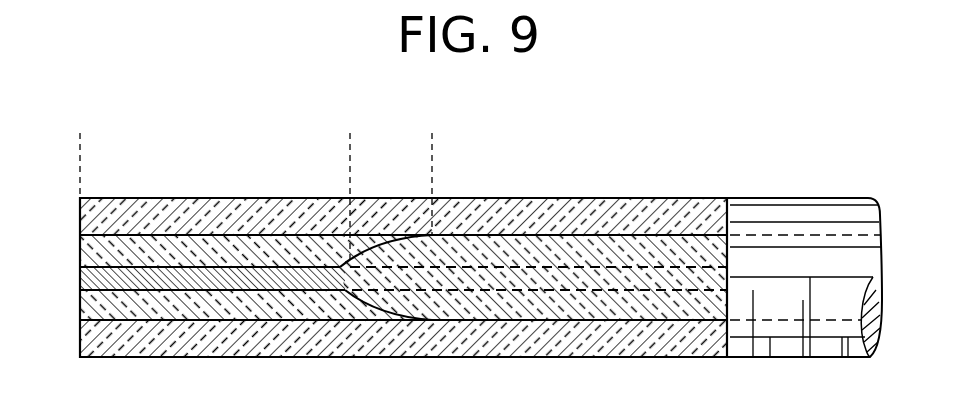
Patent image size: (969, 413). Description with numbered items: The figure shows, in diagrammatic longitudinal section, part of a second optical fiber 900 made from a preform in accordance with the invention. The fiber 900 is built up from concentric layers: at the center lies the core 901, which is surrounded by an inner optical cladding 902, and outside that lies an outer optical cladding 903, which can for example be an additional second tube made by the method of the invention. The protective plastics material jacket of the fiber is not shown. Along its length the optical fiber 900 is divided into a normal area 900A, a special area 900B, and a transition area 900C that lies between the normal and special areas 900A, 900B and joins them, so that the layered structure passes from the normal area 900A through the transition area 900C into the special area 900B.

The optical fiber 900 is at (779, 184).
The normal area 900A is at (345, 137).
The special area 900B is at (440, 137).
The transition area 900C is at (432, 137).
The core 901 is at (135, 279).
The inner optical cladding 902 is at (236, 250).
The outer optical cladding 903 is at (569, 341).